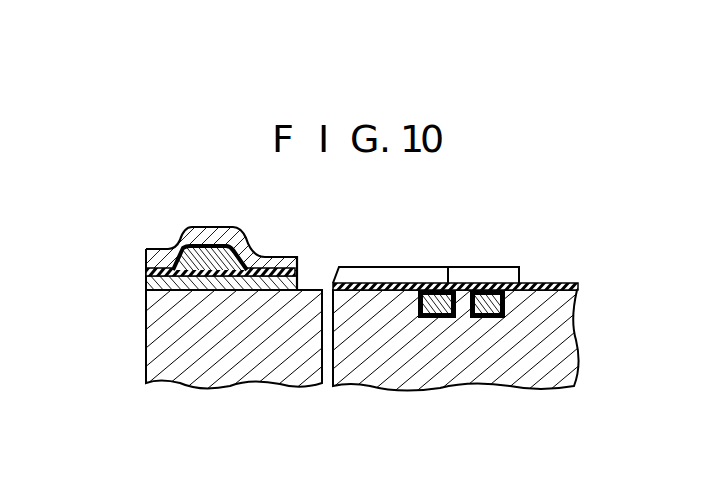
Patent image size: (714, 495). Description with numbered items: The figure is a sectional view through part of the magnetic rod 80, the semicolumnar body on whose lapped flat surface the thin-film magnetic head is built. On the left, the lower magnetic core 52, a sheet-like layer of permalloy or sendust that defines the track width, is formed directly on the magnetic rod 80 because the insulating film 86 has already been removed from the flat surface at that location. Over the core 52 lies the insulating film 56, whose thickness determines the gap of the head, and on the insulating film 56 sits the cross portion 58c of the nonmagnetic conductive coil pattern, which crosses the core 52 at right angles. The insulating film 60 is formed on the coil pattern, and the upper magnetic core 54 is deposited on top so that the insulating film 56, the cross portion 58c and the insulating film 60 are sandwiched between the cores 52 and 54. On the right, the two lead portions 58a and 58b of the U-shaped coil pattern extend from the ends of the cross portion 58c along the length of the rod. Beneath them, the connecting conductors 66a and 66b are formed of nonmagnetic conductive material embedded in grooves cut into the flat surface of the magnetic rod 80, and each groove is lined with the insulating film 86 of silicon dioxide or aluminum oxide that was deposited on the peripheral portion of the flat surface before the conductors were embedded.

The magnetic core 52 is at (148, 283).
The magnetic core 54 is at (150, 250).
The insulating film 56 is at (148, 272).
The lead portion 58a is at (365, 274).
The lead portion 58b is at (497, 274).
The cross portion 58c is at (218, 258).
The insulating film 60 is at (188, 247).
The connecting conductor 66a is at (425, 315).
The connecting conductor 66b is at (483, 315).
The magnetic rod 80 is at (162, 338).
The insulating film 86 is at (506, 300).